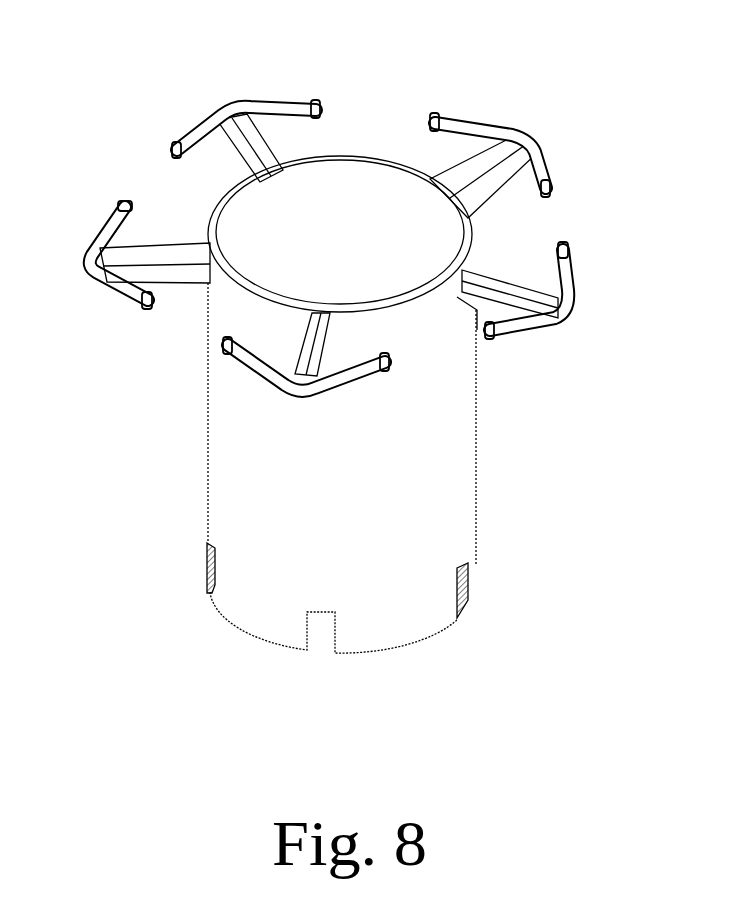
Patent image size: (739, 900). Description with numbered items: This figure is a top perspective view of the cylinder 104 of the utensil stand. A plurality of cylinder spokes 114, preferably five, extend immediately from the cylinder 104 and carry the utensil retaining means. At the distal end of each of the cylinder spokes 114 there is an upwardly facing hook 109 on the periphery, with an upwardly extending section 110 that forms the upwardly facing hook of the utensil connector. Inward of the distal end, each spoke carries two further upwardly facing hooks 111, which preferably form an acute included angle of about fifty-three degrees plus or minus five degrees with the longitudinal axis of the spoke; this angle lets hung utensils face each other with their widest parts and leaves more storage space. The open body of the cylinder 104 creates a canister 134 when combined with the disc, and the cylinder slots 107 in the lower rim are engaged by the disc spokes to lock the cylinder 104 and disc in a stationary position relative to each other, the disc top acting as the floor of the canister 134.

The cylinder 104 is at (237, 477).
The cylinder slots 107 is at (190, 594).
The upwardly facing hooks 109 is at (190, 123).
The upwardly extending sections 110 is at (105, 194).
The upwardly facing hooks 111 is at (293, 103).
The cylinder spokes 114 is at (284, 160).
The canister 134 is at (352, 228).